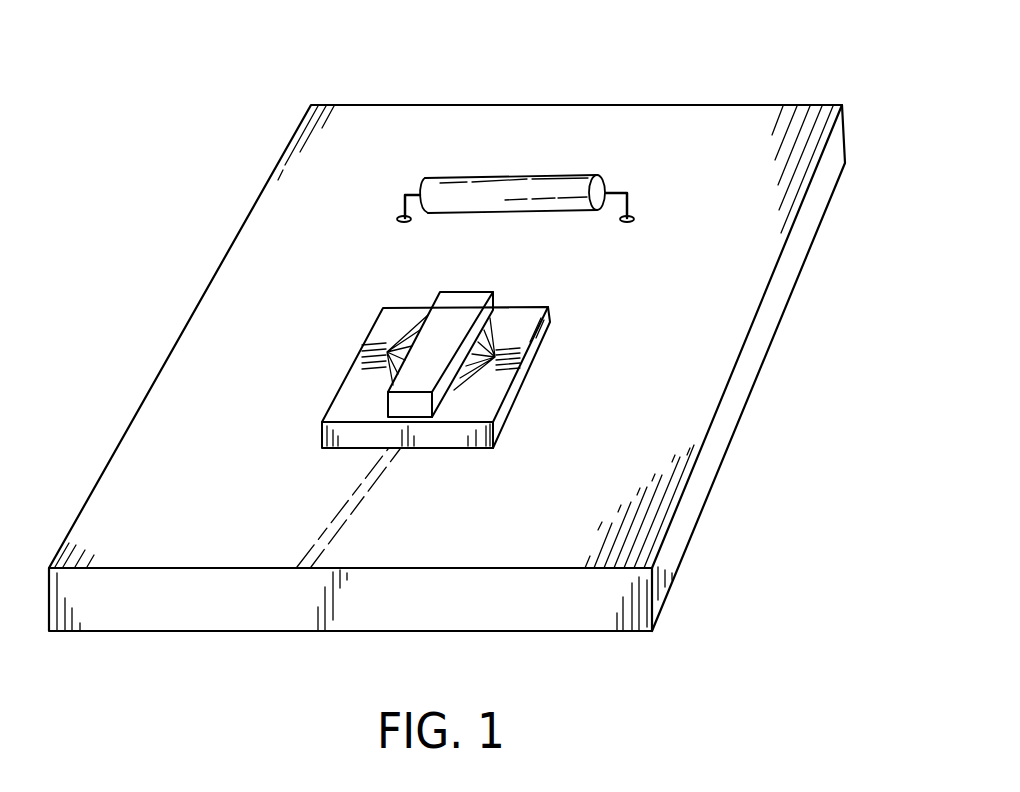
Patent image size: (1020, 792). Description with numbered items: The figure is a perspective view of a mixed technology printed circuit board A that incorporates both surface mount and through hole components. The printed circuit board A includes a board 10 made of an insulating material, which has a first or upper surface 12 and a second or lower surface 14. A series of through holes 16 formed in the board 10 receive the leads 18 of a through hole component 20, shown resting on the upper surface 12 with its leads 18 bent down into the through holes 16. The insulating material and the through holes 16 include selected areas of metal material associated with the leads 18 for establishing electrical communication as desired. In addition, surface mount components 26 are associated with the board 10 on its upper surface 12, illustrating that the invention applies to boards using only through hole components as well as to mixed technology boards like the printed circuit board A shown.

The board 10 is at (447, 368).
The first or upper surface 12 is at (685, 118).
The second or lower surface 14 is at (235, 633).
The through holes 16 is at (408, 222).
The leads 18 is at (407, 193).
The through hole component 20 is at (555, 182).
The surface mount components 26 is at (513, 387).
The printed circuit board A is at (763, 91).